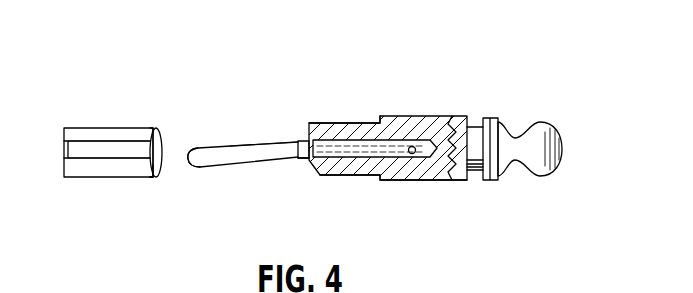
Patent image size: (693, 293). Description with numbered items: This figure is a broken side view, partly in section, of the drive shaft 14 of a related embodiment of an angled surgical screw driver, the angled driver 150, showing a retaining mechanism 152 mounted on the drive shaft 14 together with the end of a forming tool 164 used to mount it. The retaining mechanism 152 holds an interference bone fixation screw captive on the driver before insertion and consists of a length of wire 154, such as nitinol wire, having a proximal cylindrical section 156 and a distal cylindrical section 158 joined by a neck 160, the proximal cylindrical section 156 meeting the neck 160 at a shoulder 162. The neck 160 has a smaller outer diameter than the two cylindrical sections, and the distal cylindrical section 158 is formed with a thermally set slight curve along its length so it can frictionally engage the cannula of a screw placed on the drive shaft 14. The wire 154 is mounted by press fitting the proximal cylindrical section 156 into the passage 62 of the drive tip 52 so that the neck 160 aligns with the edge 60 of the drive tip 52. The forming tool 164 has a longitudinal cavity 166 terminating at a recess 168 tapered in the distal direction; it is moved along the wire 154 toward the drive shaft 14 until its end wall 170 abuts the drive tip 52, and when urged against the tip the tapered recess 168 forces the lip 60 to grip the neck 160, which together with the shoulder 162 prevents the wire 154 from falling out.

The drive shaft 14 is at (371, 144).
The drive tip 52 is at (363, 177).
The edge 60 is at (303, 141).
The passage 62 is at (412, 154).
The angled driver 150 is at (578, 157).
The retaining mechanism 152 is at (258, 141).
The wire 154 is at (270, 158).
The proximal cylindrical section 156 is at (358, 132).
The distal cylindrical section 158 is at (213, 168).
The neck 160 is at (304, 158).
The shoulder 162 is at (313, 124).
The forming tool 164 is at (108, 128).
The longitudinal cavity 166 is at (122, 158).
The recess 168 is at (158, 129).
The end wall 170 is at (160, 171).